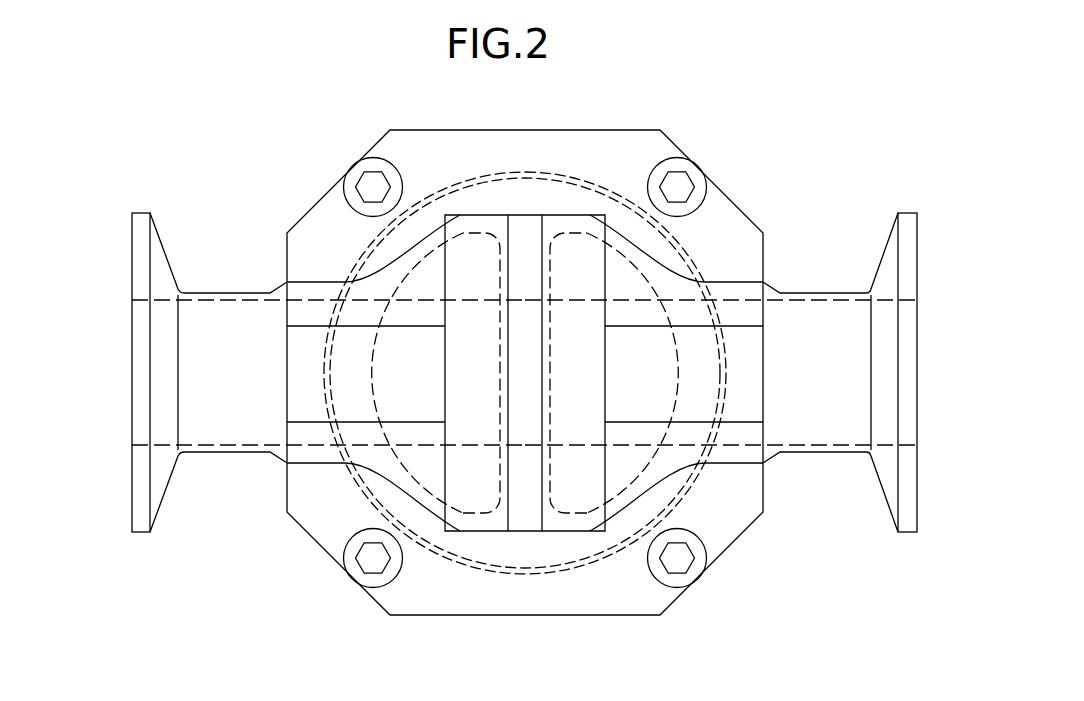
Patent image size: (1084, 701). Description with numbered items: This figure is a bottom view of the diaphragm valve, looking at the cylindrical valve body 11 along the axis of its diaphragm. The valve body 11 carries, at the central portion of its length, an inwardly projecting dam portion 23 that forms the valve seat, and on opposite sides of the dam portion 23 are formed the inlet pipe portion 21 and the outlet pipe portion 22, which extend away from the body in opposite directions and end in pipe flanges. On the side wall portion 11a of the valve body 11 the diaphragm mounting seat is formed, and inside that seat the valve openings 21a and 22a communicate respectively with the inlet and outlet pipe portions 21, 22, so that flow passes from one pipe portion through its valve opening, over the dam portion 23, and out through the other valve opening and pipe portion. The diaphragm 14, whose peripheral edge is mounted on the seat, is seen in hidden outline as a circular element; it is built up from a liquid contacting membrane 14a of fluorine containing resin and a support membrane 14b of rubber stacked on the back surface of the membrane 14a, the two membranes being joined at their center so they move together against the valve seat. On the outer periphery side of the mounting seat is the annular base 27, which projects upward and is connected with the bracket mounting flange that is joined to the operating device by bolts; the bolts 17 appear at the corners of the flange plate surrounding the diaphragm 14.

The valve body 11 is at (226, 283).
The side wall portion 11a is at (797, 327).
The diaphragm 14 is at (519, 158).
The membrane 14a is at (453, 193).
The support membrane 14b is at (564, 173).
The bolt 17 is at (678, 163).
The inlet pipe portion 21 is at (840, 407).
The valve opening 21a is at (633, 307).
The outlet pipe portion 22 is at (260, 417).
The valve opening 22a is at (410, 298).
The dam portion 23 is at (480, 490).
The annular base 27 is at (620, 163).